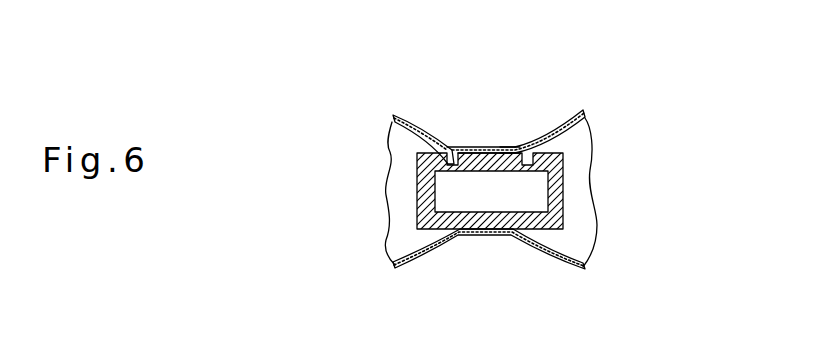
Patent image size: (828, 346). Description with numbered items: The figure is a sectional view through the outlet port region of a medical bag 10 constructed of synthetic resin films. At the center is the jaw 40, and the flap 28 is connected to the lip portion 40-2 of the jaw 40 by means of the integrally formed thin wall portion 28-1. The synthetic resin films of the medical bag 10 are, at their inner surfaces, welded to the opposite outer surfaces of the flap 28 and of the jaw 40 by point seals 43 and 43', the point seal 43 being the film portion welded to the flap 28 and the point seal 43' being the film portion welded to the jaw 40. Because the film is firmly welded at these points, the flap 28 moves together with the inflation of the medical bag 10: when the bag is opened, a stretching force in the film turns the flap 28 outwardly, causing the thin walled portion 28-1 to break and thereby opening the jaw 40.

The medical bag 10 is at (568, 109).
The flap 28 is at (491, 148).
The thin walled portion 28-1 is at (454, 150).
The jaw 40 is at (490, 229).
The lip portion 40-2 is at (417, 153).
The point seal 43 is at (555, 94).
The point seal 43' is at (489, 272).